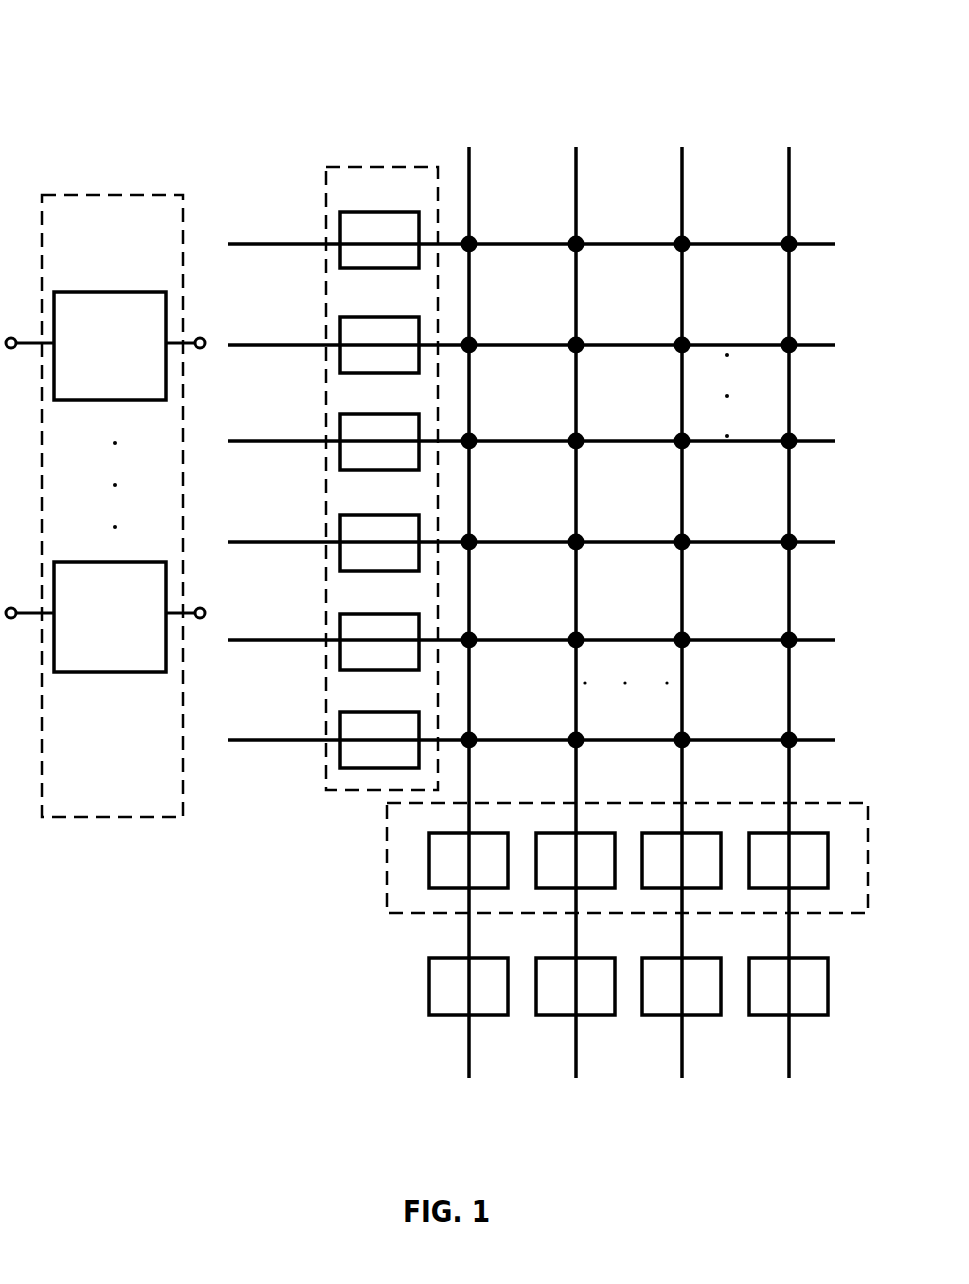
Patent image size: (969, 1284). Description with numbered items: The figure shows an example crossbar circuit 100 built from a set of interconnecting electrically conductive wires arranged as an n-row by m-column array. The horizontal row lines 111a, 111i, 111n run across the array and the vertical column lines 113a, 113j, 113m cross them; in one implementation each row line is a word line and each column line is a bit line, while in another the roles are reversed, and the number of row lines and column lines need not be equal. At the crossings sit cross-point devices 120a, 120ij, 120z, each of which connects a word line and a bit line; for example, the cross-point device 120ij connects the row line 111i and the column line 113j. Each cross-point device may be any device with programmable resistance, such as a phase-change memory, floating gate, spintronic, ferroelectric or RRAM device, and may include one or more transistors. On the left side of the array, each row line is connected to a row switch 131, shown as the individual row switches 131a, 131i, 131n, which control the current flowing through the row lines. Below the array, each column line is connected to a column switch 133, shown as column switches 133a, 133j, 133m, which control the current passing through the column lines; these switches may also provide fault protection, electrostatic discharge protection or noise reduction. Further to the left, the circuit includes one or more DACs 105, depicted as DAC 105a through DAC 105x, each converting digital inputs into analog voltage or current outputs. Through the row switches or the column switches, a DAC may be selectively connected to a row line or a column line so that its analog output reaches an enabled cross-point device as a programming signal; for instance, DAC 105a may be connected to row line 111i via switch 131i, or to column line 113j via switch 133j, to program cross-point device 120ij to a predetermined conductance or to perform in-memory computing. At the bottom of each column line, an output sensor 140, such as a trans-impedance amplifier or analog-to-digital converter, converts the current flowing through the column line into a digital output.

The crossbar circuit 100 is at (120, 98).
The DACs 105 is at (176, 228).
The DAC 105a is at (88, 370).
The DAC 105x is at (88, 640).
The row line 111a is at (247, 251).
The row line 111i is at (253, 550).
The row line 111n is at (246, 748).
The column line 113a is at (476, 211).
The column line 113j is at (690, 206).
The column line 113m is at (838, 192).
The cross-point device 120a is at (475, 256).
The cross-point device 120ij is at (689, 553).
The cross-point device 120z is at (794, 752).
The row switches 131 is at (431, 201).
The row switch 131a is at (347, 272).
The row switch 131i is at (364, 576).
The row switch 131n is at (445, 708).
The column switches 133 is at (433, 831).
The column switch 133a is at (427, 862).
The column switch 133j is at (698, 857).
The column switch 133m is at (830, 870).
The output sensor 140 is at (450, 997).